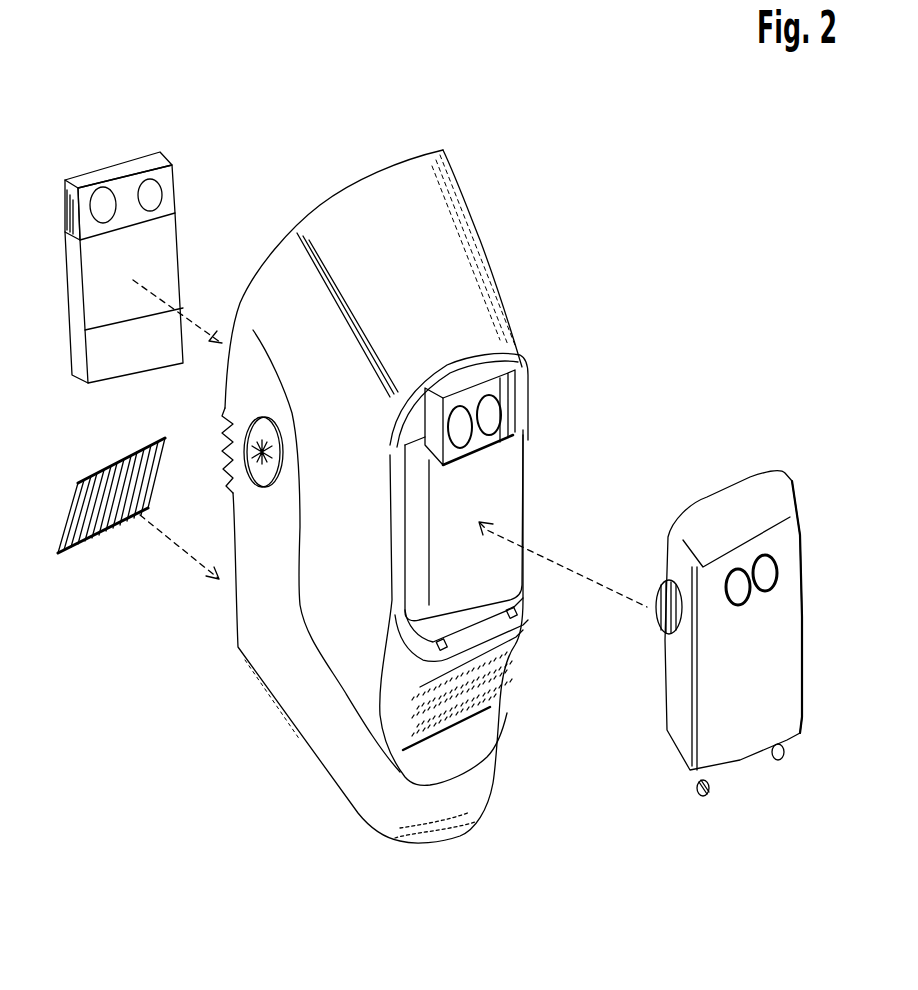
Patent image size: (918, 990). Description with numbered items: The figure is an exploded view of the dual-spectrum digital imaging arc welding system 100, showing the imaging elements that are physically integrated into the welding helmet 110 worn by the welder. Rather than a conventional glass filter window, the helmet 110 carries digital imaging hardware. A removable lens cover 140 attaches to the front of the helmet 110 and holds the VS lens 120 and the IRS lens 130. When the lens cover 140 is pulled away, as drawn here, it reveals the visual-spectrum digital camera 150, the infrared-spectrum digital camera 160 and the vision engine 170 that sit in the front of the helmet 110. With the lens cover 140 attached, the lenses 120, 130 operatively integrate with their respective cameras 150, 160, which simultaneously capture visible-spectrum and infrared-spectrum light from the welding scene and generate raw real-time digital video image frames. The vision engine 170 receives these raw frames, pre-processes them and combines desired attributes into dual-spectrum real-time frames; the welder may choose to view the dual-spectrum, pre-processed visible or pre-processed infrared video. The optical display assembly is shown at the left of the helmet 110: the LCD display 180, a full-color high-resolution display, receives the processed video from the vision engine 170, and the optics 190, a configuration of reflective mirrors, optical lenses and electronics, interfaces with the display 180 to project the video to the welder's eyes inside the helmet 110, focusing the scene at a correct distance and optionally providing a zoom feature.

The dual-spectrum digital imaging arc welding system 100 is at (300, 204).
The welding helmet 110 is at (433, 183).
The VS lens 120 is at (743, 604).
The IRS lens 130 is at (780, 567).
The removable lens cover 140 is at (693, 787).
The visual-spectrum digital camera 150 is at (448, 388).
The infrared-spectrum digital camera 160 is at (487, 380).
The vision engine 170 is at (507, 483).
The LCD display 180 is at (87, 543).
The optics 190 is at (83, 168).